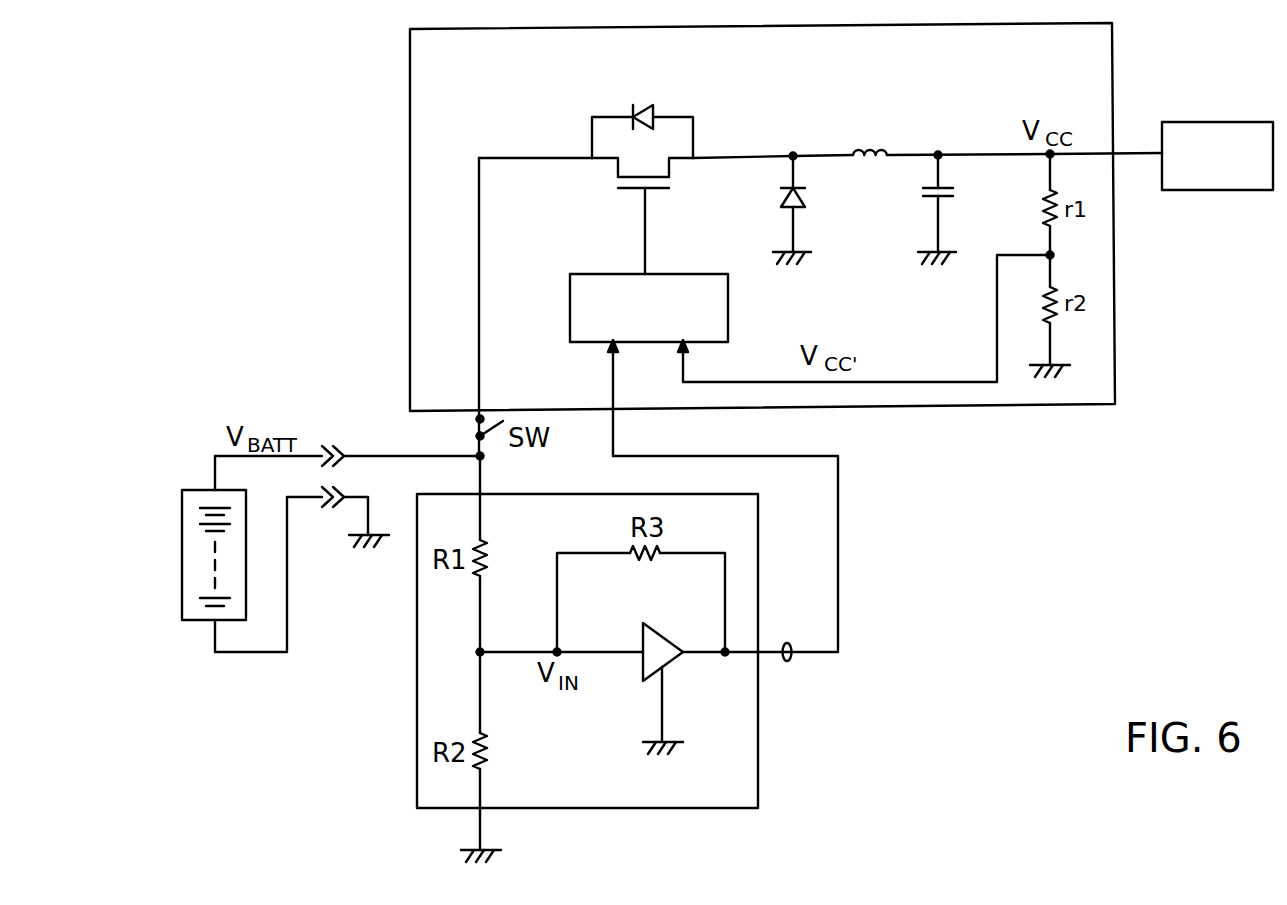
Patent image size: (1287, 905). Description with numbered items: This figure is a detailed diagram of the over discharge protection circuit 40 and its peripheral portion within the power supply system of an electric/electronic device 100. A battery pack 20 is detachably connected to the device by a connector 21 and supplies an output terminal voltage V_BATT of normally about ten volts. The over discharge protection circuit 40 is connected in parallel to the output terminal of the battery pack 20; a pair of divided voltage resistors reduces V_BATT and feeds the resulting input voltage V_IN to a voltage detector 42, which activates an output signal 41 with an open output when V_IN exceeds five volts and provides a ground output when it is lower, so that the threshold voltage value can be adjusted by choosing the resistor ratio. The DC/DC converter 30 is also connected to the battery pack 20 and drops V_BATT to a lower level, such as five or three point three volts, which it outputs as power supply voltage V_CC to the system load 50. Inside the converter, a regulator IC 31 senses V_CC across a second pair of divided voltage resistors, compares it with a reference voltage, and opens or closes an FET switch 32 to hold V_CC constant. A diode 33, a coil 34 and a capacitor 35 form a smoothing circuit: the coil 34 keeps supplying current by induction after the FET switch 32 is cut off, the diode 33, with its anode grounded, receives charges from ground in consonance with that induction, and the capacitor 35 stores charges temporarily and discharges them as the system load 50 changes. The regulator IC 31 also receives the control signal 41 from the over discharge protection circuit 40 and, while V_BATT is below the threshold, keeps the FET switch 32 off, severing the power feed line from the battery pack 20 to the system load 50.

The DC/DC converter 30 is at (410, 127).
The regulator IC 31 is at (706, 259).
The FET switch 32 is at (676, 102).
The diode 33 is at (801, 202).
The coil 34 is at (913, 110).
The capacitor 35 is at (957, 195).
The system load 50 is at (1238, 121).
The battery pack 20 is at (193, 489).
The connector 21 is at (329, 537).
The over discharge protection circuit 40 is at (685, 809).
The output signal 41 is at (790, 662).
The voltage detector 42 is at (663, 640).
The electric/electronic device 100 is at (978, 562).